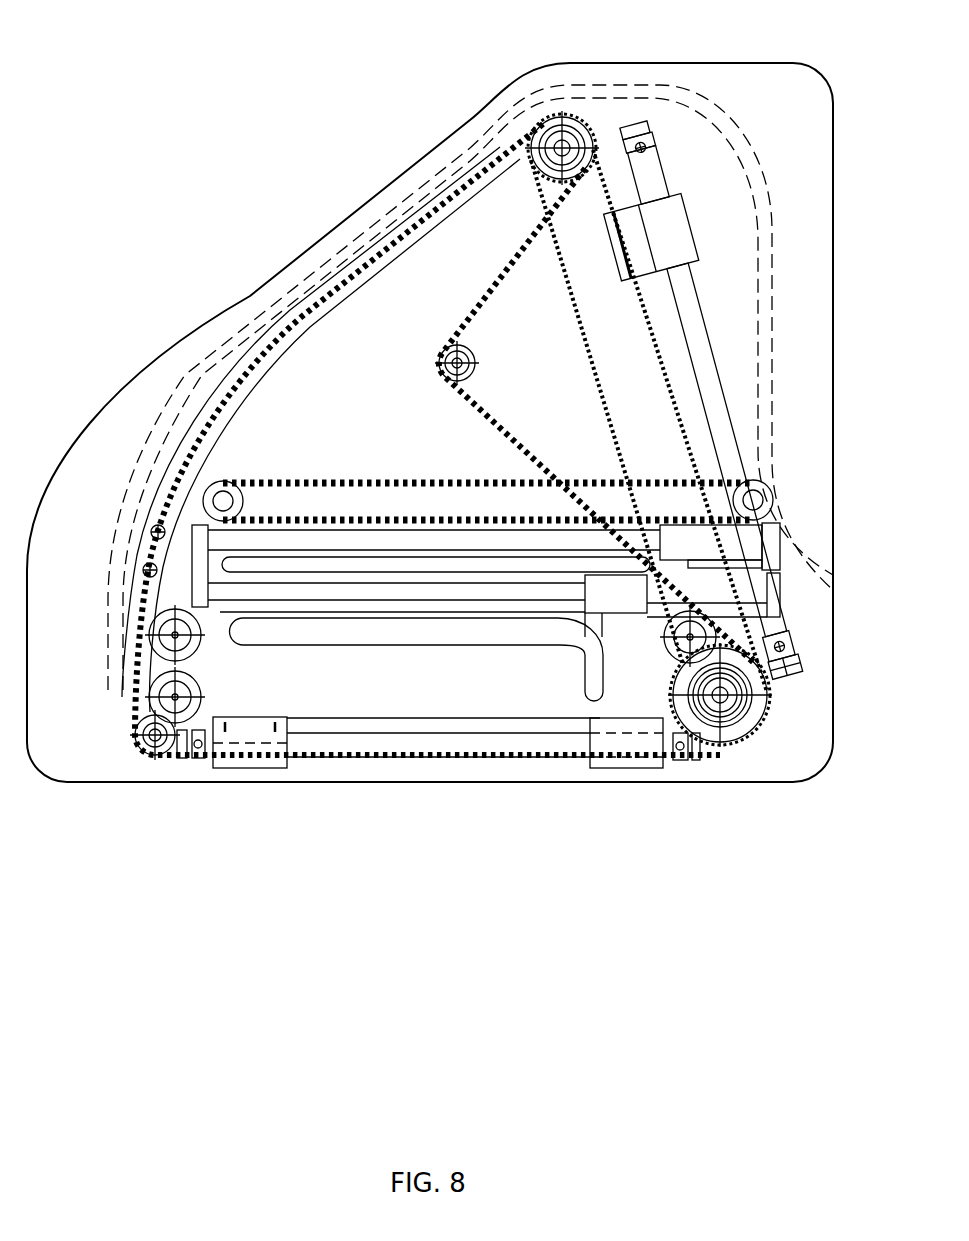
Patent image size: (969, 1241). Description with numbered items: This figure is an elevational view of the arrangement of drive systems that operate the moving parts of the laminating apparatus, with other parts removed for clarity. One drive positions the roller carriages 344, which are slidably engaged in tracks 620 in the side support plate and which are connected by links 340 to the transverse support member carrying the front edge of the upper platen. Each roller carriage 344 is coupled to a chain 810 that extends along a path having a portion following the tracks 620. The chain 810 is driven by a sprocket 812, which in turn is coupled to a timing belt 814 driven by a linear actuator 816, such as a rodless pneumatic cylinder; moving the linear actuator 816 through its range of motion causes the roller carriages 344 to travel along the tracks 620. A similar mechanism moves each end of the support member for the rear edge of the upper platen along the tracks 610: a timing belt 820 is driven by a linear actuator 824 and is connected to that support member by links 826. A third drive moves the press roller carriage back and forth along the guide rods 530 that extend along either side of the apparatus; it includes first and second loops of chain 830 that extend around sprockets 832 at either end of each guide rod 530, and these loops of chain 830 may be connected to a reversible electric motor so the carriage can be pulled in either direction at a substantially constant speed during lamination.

The links 340 is at (150, 545).
The roller carriages 344 is at (160, 533).
The guide rods 530 is at (352, 573).
The tracks 610 is at (447, 643).
The tracks 620 is at (275, 318).
The chain 810 is at (355, 275).
The sprocket 812 is at (747, 720).
The timing belt 814 is at (600, 173).
The linear actuator 816 is at (680, 193).
The timing belt 820 is at (227, 613).
The linear actuator 824 is at (233, 768).
The links 826 is at (593, 690).
The loops of chain 830 is at (313, 483).
The sprockets 832 is at (210, 493).